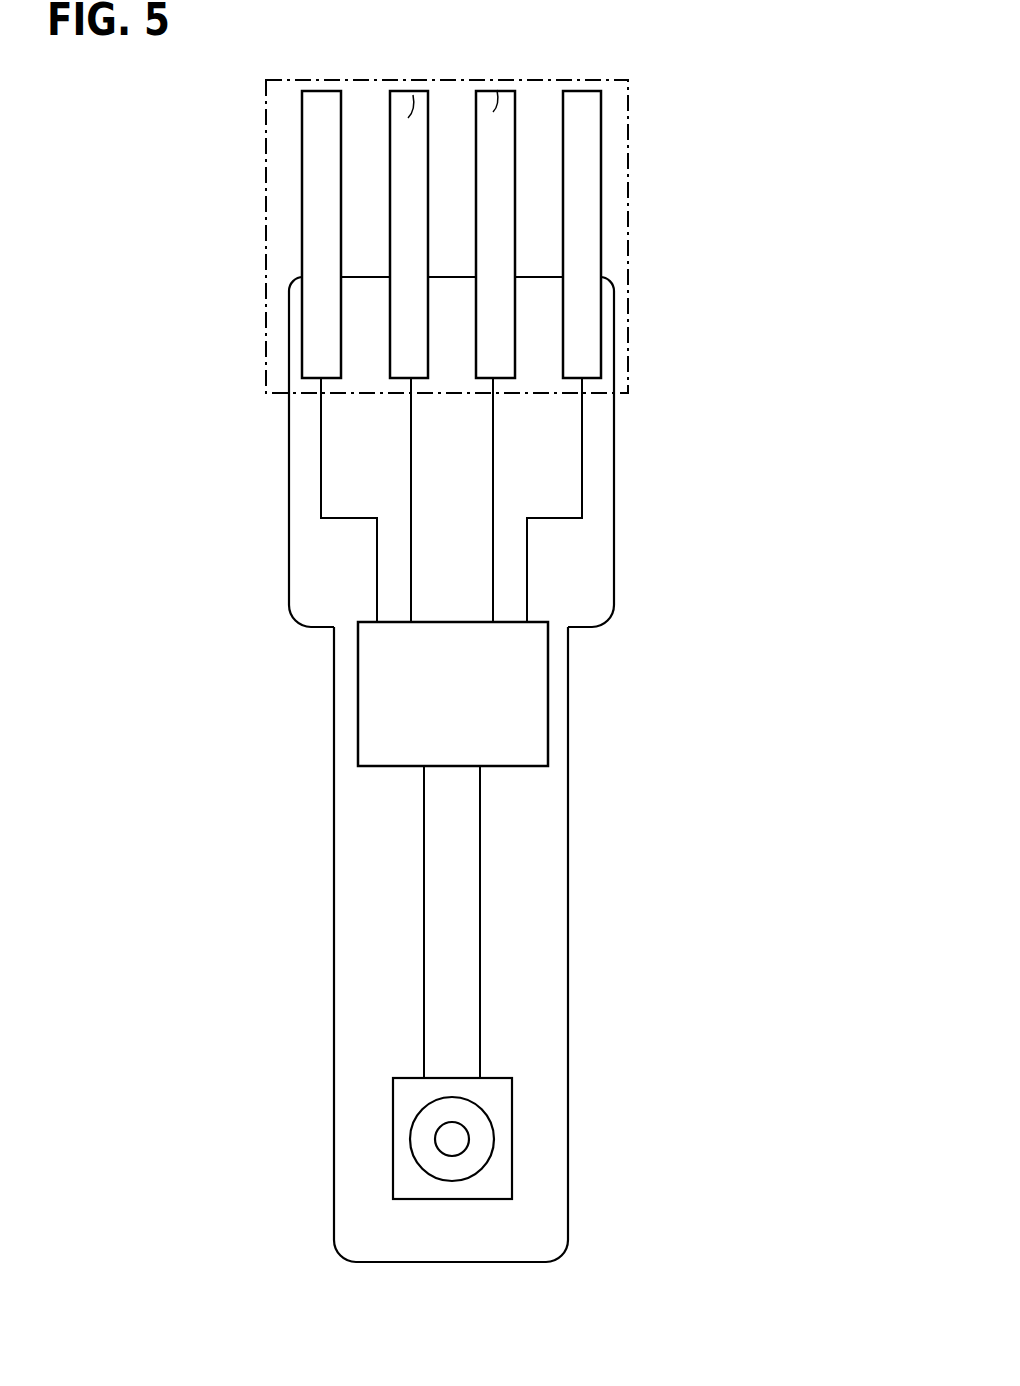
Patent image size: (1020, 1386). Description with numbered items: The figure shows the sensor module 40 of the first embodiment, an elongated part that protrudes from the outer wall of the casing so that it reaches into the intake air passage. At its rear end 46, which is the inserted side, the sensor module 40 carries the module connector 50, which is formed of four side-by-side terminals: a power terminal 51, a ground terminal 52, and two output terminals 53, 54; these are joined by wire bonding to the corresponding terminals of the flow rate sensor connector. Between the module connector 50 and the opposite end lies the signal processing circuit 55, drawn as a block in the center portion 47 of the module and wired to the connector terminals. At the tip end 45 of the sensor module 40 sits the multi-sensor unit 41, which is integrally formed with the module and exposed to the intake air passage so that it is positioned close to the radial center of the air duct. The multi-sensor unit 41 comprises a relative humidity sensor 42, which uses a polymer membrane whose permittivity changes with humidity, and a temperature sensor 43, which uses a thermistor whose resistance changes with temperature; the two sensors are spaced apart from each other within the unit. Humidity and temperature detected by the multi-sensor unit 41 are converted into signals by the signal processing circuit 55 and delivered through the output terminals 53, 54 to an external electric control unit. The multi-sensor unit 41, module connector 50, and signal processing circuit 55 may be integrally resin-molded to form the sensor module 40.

The sensor module 40 is at (724, 345).
The multi-sensor unit 41 is at (640, 1117).
The relative humidity sensor 42 is at (452, 1135).
The temperature sensor 43 is at (453, 1141).
The tip end 45 is at (371, 1185).
The rear end 46 is at (440, 437).
The center portion 47 is at (397, 803).
The module connector 50 is at (597, 80).
The power terminal 51 is at (586, 148).
The ground terminal 52 is at (493, 112).
The output terminal 53 is at (408, 118).
The output terminal 54 is at (322, 158).
The signal processing circuit 55 is at (492, 694).